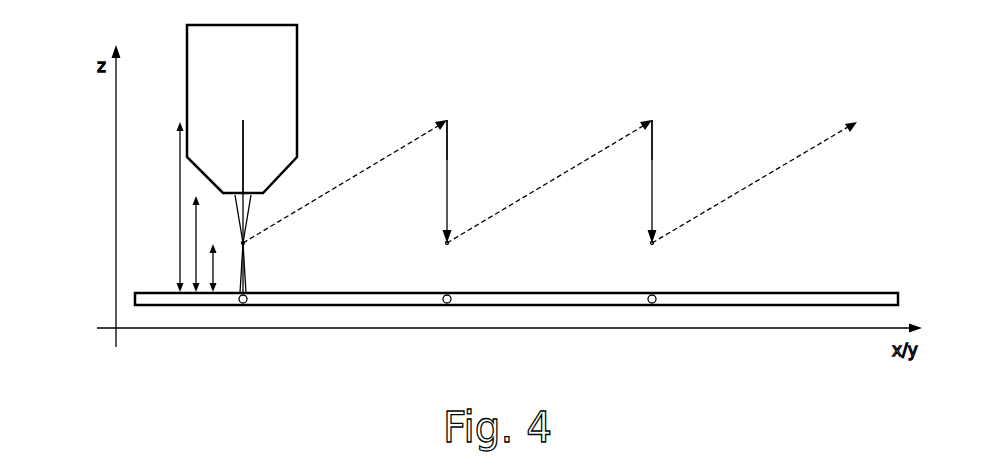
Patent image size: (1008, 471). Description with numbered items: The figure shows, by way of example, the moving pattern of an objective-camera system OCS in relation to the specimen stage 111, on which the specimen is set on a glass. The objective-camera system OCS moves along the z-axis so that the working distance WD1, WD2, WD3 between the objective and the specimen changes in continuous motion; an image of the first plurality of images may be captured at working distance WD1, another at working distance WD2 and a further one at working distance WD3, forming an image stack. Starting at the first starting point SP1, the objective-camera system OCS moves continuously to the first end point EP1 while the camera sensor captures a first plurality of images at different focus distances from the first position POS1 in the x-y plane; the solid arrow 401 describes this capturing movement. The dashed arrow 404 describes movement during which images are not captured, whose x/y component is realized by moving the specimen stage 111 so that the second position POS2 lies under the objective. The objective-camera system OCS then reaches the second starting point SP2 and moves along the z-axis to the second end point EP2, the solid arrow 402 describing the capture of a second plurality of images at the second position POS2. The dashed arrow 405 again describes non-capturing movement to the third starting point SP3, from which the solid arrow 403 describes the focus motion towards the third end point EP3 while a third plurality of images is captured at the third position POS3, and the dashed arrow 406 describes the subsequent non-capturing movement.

The objective-camera system OCS is at (290, 47).
The first starting point SP1 is at (243, 120).
The second starting point SP2 is at (448, 120).
The third starting point SP3 is at (653, 120).
The first end point EP1 is at (245, 243).
The second end point EP2 is at (449, 243).
The third end point EP3 is at (654, 243).
The solid arrow 401 is at (243, 147).
The solid arrow 402 is at (449, 128).
The solid arrow 403 is at (654, 128).
The dashed arrow 404 is at (320, 200).
The dashed arrow 405 is at (497, 205).
The dashed arrow 406 is at (705, 200).
The working distance 1 WD1 is at (180, 140).
The working distance 2 WD2 is at (196, 212).
The working distance 3 WD3 is at (213, 260).
The first position POS1 is at (241, 305).
The second position POS2 is at (445, 305).
The third position POS3 is at (650, 305).
The stage 111 is at (788, 298).